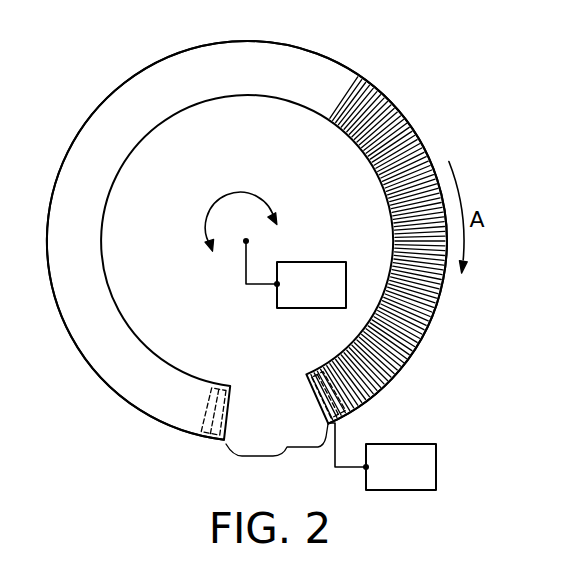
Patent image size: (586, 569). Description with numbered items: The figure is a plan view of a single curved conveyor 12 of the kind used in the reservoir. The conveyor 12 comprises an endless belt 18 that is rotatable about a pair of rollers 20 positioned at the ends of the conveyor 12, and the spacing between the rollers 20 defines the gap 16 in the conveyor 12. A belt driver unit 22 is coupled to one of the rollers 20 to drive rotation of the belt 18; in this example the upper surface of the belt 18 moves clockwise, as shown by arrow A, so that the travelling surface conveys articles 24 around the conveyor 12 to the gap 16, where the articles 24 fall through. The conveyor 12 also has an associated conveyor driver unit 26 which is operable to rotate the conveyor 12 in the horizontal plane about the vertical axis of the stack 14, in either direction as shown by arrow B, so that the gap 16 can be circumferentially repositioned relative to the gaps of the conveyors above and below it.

The conveyor 12 is at (116, 393).
The stack 14 is at (249, 241).
The gap 16 is at (277, 455).
The endless belt 18 is at (293, 55).
The rollers 20 is at (213, 434).
The belt driver unit 22 is at (389, 477).
The articles 24 is at (375, 106).
The conveyor driver unit 26 is at (299, 295).